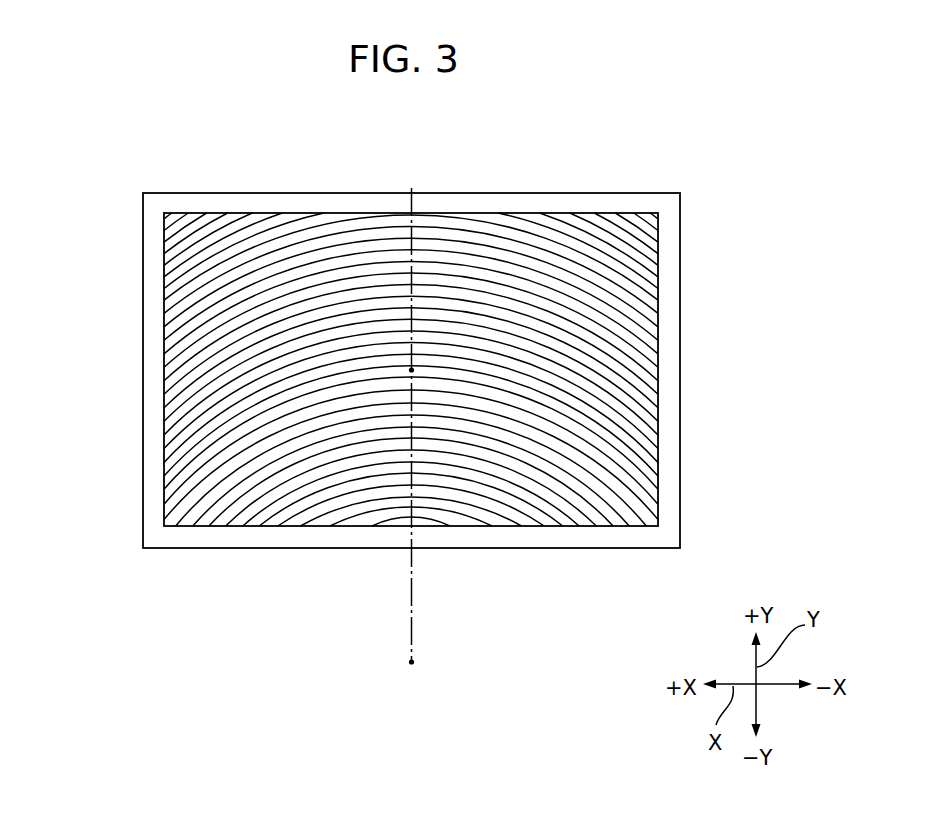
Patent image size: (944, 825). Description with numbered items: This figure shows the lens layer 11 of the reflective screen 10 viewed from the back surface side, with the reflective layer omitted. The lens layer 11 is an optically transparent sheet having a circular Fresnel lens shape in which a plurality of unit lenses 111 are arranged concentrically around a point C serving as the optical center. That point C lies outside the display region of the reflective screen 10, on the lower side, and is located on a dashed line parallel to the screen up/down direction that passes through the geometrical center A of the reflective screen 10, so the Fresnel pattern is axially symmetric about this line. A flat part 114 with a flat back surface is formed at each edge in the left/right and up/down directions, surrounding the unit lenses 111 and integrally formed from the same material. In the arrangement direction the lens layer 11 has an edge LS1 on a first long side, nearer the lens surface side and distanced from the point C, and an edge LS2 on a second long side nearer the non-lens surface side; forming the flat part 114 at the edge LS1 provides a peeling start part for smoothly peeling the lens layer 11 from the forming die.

The reflective screen 10 is at (411, 340).
The lens layer 11 is at (582, 192).
The unit lens 111 is at (643, 428).
The flat part 114 is at (318, 192).
The edge on a first long side LS1 is at (250, 178).
The edge on a second long side LS2 is at (223, 561).
The geometrical center A is at (412, 370).
The point serving as optical center C is at (413, 661).